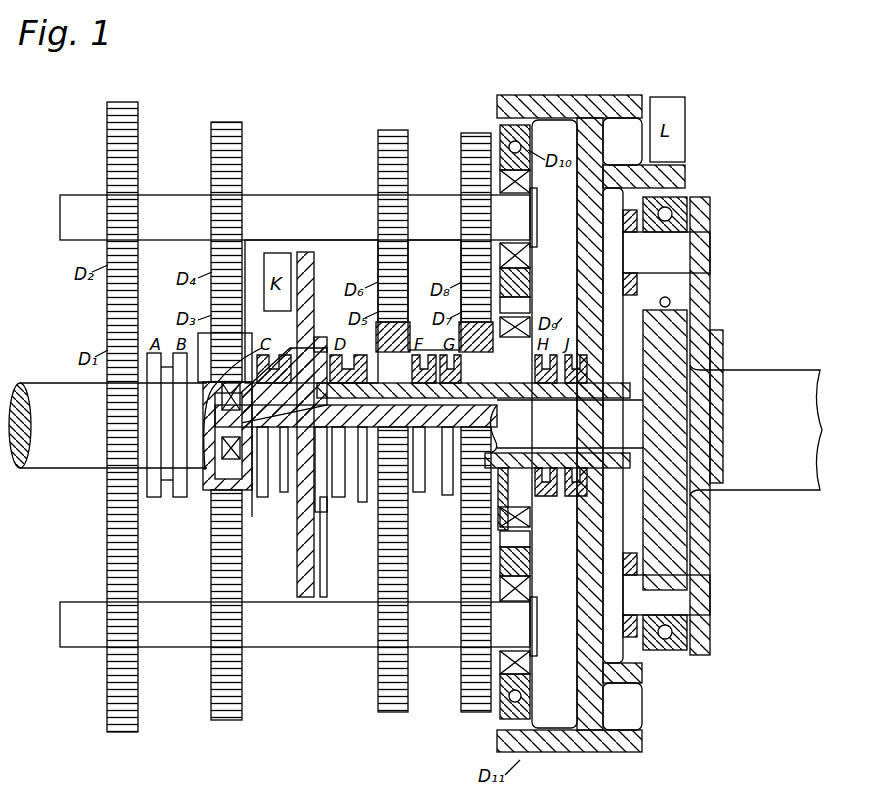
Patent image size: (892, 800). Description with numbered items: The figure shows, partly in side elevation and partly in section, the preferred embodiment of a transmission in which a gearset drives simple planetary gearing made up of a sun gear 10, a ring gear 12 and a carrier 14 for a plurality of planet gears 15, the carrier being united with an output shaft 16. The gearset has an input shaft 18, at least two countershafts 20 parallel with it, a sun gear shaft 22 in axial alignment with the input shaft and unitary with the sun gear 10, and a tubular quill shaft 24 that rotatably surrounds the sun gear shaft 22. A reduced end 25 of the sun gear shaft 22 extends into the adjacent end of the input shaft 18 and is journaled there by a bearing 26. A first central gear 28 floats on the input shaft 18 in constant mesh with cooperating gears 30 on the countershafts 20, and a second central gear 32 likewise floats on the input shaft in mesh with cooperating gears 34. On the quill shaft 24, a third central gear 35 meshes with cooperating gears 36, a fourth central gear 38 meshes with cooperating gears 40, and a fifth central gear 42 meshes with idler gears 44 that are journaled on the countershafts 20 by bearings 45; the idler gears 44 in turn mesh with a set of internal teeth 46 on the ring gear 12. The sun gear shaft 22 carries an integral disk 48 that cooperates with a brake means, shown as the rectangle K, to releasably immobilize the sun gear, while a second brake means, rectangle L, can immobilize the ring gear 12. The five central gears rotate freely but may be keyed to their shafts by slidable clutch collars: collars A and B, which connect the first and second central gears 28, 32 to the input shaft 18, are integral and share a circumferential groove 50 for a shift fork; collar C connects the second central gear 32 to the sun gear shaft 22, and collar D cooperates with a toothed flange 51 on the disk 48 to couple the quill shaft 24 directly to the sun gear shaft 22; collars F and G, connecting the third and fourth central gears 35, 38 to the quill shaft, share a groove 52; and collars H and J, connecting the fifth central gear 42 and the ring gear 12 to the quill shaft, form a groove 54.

The sun gear 10 is at (668, 345).
The ring gear 12 is at (678, 178).
The carrier 14 is at (700, 305).
The planet gears 15 is at (665, 215).
The output shaft 16 is at (762, 468).
The input shaft 18 is at (50, 458).
The countershafts 20 is at (280, 207).
The sun gear shaft 22 is at (590, 432).
The tubular quill shaft 24 is at (605, 383).
The reduced end 25 is at (212, 452).
The bearing 26 is at (218, 432).
The first central gear 28 is at (115, 470).
The cooperating gears 30 is at (110, 176).
The second central gear 32 is at (230, 527).
The cooperating gears 34 is at (218, 183).
The third central gear 35 is at (385, 500).
The cooperating gears 36 is at (388, 162).
The fourth central gear 38 is at (475, 505).
The cooperating gears 40 is at (470, 185).
The fifth central gear 42 is at (522, 515).
The idler gears 44 is at (525, 140).
The bearings 45 is at (522, 262).
The internal teeth 46 is at (502, 118).
The integral disk 48 is at (312, 270).
The circumferential groove 50 is at (178, 480).
The toothed flange 51 is at (312, 345).
The groove 52 is at (415, 490).
The groove 54 is at (545, 498).